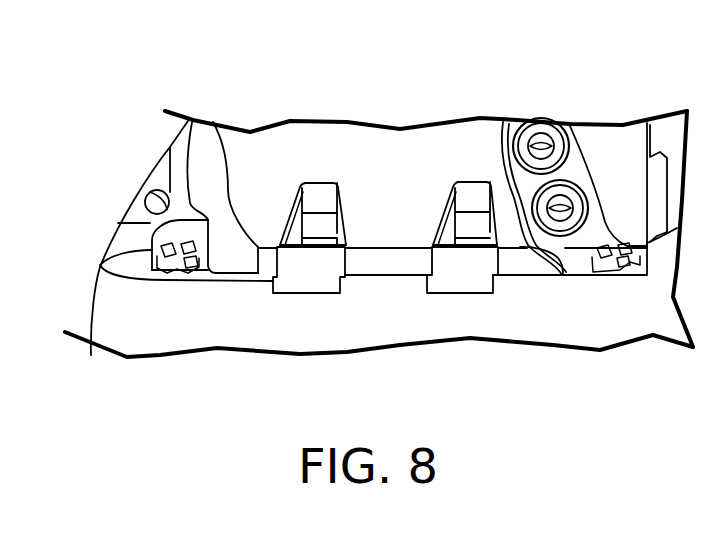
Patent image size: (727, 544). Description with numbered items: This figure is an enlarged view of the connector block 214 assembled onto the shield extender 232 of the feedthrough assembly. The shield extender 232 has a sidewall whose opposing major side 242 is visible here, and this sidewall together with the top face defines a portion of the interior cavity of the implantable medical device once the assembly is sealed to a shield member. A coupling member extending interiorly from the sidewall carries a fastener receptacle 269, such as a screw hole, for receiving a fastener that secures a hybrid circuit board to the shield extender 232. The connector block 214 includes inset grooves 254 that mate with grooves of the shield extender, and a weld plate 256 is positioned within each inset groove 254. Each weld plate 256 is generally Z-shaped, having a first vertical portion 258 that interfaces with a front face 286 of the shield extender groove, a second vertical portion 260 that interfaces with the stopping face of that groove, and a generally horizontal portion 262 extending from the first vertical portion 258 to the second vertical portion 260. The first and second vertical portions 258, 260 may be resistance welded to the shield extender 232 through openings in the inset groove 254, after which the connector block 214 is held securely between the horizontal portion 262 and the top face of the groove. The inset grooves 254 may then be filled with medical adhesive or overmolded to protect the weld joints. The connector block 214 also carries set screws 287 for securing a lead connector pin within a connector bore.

The connector block 214 is at (160, 155).
The fastener receptacle 269 is at (144, 207).
The shield extender 232 is at (94, 293).
The front face 286 is at (275, 285).
The weld plate 256 is at (347, 264).
The first vertical portion 258 is at (303, 275).
The inset groove 254 is at (319, 165).
The second vertical portion 260 is at (310, 228).
The horizontal portion 262 is at (322, 244).
The set screw 287 is at (538, 142).
The major side 242 is at (587, 322).